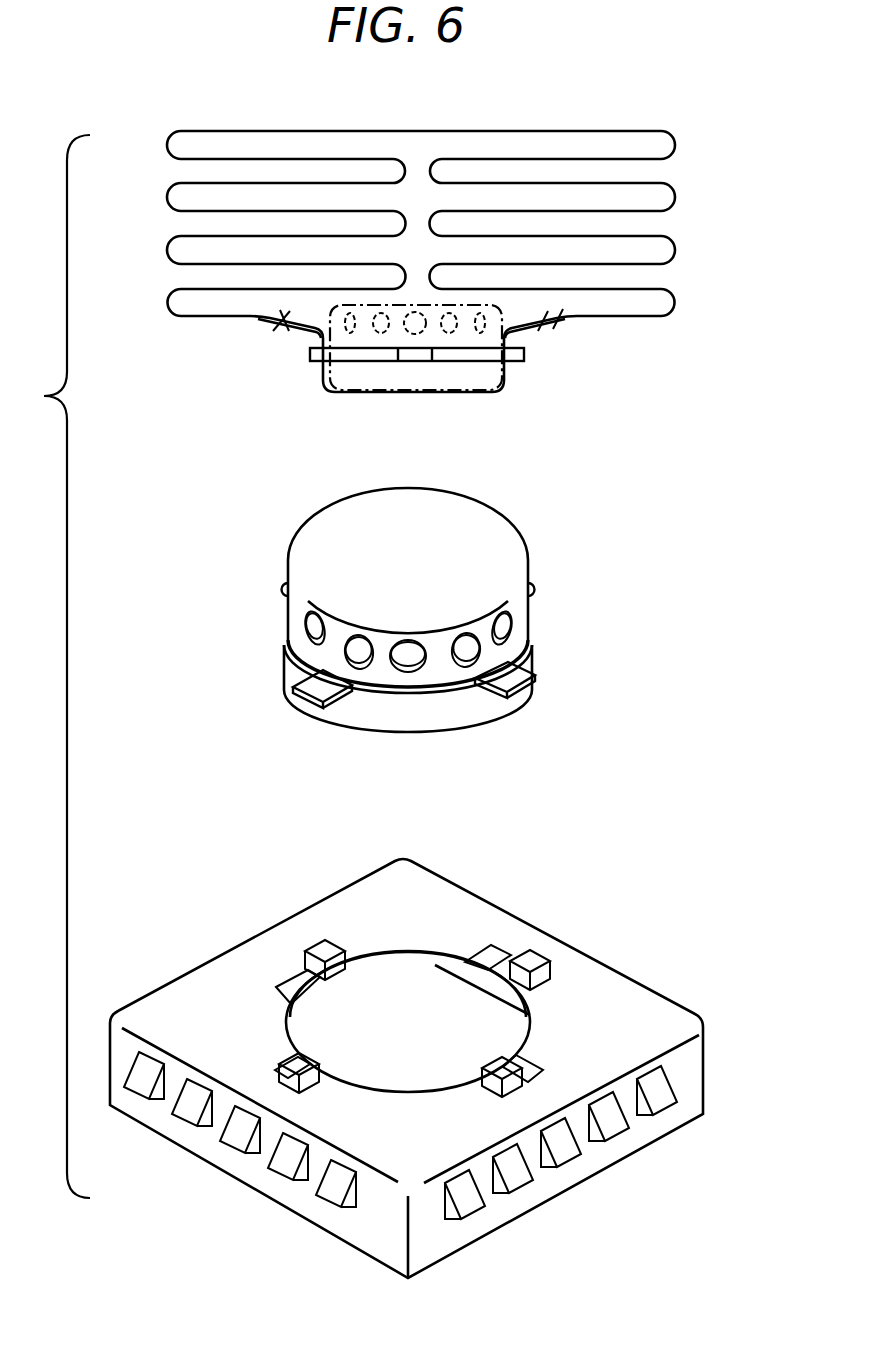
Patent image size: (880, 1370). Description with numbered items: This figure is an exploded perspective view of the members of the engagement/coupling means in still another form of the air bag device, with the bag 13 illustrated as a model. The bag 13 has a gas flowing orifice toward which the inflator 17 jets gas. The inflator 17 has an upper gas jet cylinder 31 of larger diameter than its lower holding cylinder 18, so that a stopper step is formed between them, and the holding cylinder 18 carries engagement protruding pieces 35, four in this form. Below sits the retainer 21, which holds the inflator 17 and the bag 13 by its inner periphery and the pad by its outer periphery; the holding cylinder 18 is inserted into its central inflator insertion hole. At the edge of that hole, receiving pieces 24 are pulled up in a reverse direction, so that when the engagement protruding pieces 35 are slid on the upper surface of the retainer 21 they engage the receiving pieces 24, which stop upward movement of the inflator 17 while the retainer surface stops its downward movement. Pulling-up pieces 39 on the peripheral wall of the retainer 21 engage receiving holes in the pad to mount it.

The bag 13 is at (607, 130).
The inflator 17 is at (481, 396).
The holding cylinder 18 is at (463, 712).
The retainer 21 is at (641, 967).
The receiving pieces 24 is at (539, 962).
The upper gas jet cylinder 31 is at (382, 671).
The engagement protruding pieces 35 is at (520, 361).
The pulling-up pieces 39 is at (660, 1089).